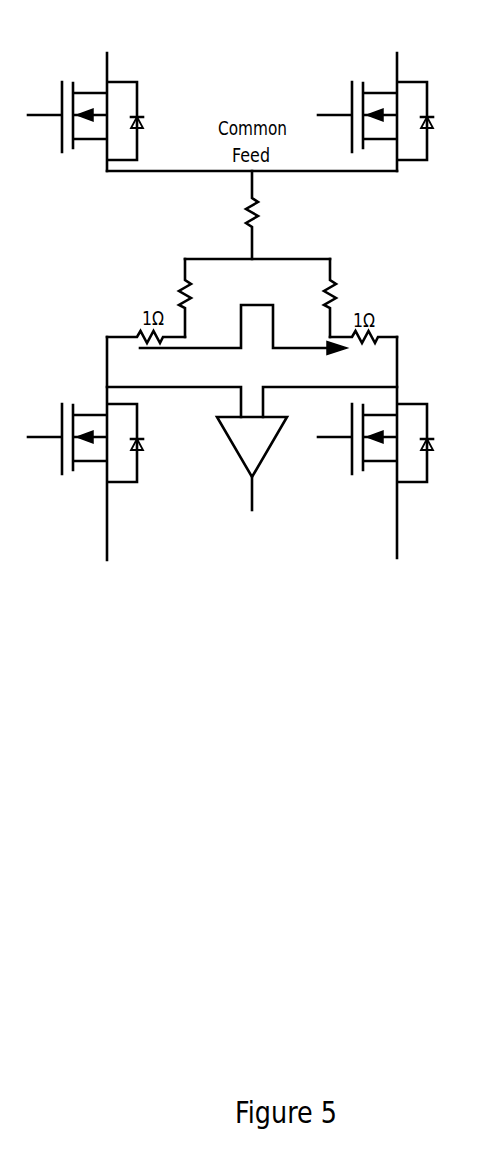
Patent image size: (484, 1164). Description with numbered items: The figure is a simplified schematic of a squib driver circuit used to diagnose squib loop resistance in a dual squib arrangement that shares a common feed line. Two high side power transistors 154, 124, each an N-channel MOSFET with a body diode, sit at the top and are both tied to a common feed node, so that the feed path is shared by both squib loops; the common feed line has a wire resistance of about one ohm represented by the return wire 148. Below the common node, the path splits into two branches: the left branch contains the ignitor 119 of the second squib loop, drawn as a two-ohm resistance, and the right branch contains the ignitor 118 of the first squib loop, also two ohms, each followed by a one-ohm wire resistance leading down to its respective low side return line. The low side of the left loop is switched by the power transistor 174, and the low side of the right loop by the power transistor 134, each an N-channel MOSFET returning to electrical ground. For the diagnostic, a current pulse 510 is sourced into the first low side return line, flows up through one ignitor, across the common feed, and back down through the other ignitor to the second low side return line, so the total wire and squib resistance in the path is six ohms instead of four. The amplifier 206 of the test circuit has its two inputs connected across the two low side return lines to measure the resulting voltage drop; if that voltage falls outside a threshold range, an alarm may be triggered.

The power transistor 154 is at (92, 92).
The power transistor 124 is at (382, 92).
The return wire 148 is at (250, 199).
The ignitor 119 is at (190, 302).
The ignitor 118 is at (325, 302).
The current pulse 510 is at (297, 350).
The amplifier 206 is at (252, 463).
The power transistor 174 is at (92, 464).
The power transistor 134 is at (383, 465).